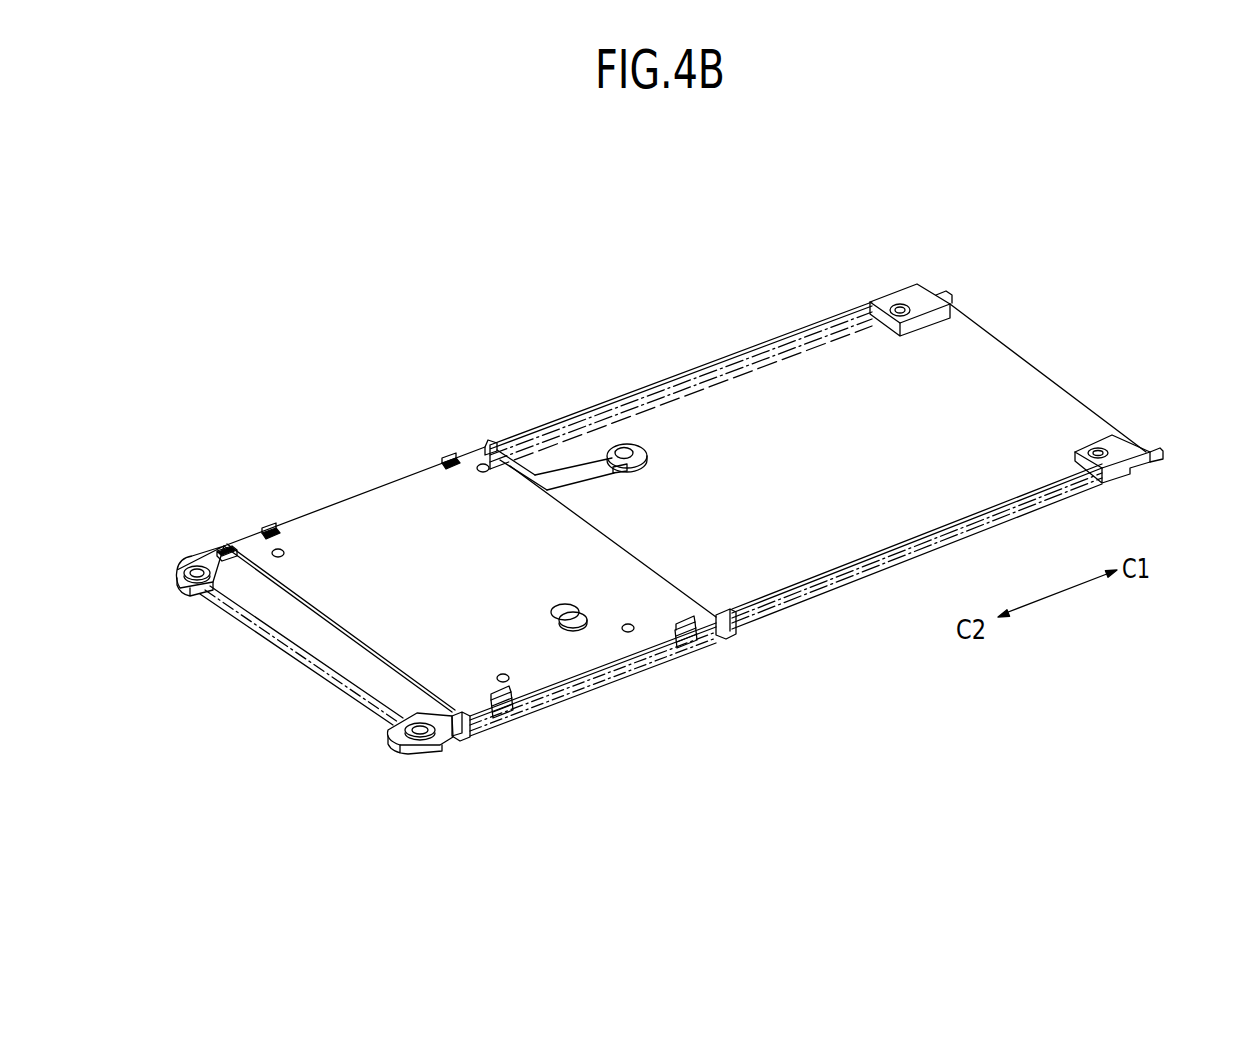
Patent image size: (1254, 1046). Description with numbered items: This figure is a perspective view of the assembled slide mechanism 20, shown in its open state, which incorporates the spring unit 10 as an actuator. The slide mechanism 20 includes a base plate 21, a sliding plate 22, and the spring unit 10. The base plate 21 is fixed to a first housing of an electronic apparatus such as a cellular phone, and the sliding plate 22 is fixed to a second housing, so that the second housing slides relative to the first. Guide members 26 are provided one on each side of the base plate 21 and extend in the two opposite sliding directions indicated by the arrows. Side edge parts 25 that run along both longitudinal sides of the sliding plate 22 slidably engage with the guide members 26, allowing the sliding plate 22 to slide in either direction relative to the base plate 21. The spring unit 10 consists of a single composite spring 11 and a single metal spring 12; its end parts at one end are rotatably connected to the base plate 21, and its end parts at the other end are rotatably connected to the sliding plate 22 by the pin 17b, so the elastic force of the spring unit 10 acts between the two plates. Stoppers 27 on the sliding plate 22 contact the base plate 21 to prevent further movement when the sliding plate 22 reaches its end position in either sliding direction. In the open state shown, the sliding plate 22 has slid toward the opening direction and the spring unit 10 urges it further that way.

The slide mechanism 20 is at (826, 219).
The base plate 21 is at (386, 504).
The sliding plate 22 is at (992, 354).
The side edge parts 25 is at (752, 367).
The guide members 26 is at (572, 690).
The stoppers 27 is at (213, 560).
The spring unit 10 is at (577, 446).
The composite spring 11 is at (570, 473).
The metal spring 12 is at (543, 472).
The pin 17b is at (626, 455).